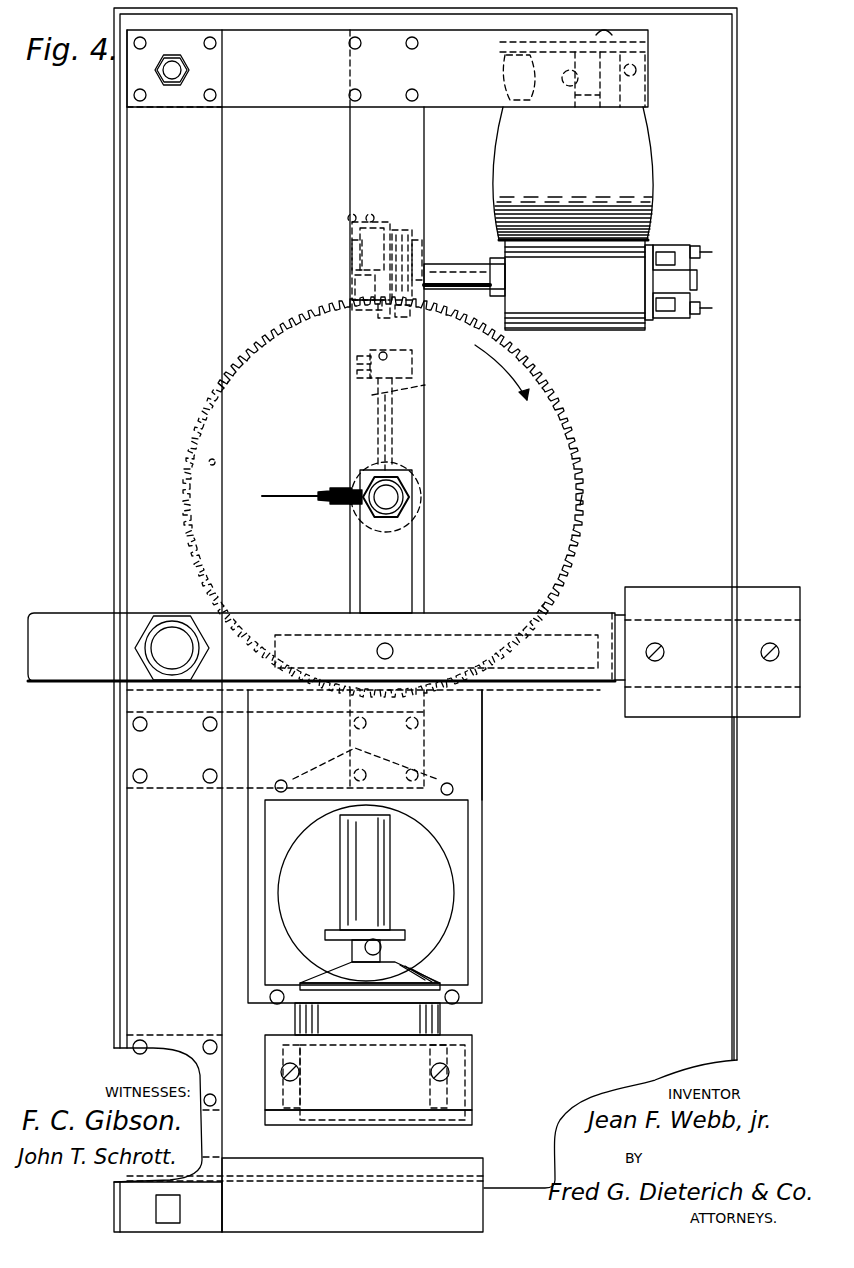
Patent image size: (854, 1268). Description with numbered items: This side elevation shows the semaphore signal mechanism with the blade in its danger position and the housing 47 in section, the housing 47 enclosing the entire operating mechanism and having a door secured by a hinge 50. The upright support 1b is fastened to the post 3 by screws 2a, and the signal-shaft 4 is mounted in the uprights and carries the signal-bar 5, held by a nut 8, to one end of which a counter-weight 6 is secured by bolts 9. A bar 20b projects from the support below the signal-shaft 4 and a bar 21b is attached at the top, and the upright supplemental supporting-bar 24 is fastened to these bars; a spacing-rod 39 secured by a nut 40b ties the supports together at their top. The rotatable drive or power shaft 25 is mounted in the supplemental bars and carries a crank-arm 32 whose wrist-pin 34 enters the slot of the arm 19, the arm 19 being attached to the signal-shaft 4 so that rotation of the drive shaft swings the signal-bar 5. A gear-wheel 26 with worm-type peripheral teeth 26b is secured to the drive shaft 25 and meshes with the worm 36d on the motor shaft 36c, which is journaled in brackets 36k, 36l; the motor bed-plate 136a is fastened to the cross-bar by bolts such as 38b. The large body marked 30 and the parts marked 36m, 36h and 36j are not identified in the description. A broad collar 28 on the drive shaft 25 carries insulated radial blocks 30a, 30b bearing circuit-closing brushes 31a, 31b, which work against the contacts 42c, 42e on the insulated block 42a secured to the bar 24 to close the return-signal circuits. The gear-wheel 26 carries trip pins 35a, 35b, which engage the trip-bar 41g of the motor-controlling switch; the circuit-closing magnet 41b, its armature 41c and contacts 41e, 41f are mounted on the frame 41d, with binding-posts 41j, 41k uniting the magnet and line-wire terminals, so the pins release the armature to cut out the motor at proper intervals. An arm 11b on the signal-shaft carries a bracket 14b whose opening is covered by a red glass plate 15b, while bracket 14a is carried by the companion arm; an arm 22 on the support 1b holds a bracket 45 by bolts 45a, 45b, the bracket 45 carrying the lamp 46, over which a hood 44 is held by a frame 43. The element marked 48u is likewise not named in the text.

The hinge 50 is at (740, 12).
The upright support 1b is at (174, 631).
The housing 47 is at (687, 888).
The bar 21b is at (276, 92).
The spacing-rod 39 is at (176, 70).
The nut 40b is at (162, 80).
The cylinder 30 is at (636, 158).
The bed-plate 136a is at (540, 45).
The bolt 38b is at (614, 30).
The valve stem 36m is at (571, 96).
The motor shaft 36c is at (490, 252).
The bracket 36k is at (488, 290).
The bracket 36l is at (696, 318).
The upper terminal clip 36h is at (672, 250).
The lower terminal clip 36j is at (663, 318).
The upright supplemental supporting-bar 24 is at (352, 168).
The circuit-closing magnet 41b is at (376, 240).
The binding-post 41k is at (372, 214).
The binding-post 41j is at (348, 218).
The frame 41d is at (352, 245).
The contact 41e is at (400, 245).
The contact 41f is at (408, 255).
The worm 36d is at (372, 280).
The trip-bar 41g is at (416, 252).
The armature 41c is at (365, 313).
The insulated block 42a is at (394, 321).
The trip finger 35a is at (410, 322).
The contact 42c is at (358, 360).
The contact 42e is at (358, 375).
The circuit-closing brush 31a is at (369, 403).
The insulated radial block 30a is at (394, 441).
The gear-wheel 26 is at (556, 434).
The peripheral teeth 26b is at (584, 518).
The trip finger 35b is at (216, 462).
The crank-arm 32 is at (400, 566).
The broad collar 28 is at (418, 512).
The rotatable drive or power shaft 25 is at (390, 495).
The circuit-closing brush 31b is at (284, 492).
The insulated radial block 30b is at (342, 500).
The signal-bar 5 is at (48, 622).
The nut 8 is at (145, 640).
The signal-shaft 4 is at (165, 655).
The wrist-pin 34 is at (394, 652).
The arm 19 is at (570, 620).
The counter-weight 6 is at (748, 600).
The bolt 9 is at (760, 652).
The arm 11b is at (240, 690).
The bar 20b is at (230, 786).
The frame 43 is at (360, 748).
The hood 44 is at (420, 782).
The bracket 14a is at (470, 940).
The bracket 14b is at (478, 737).
The glass plate 15b is at (462, 870).
The spindle 48u is at (370, 902).
The lamp 46 is at (364, 1012).
The arm 22 is at (470, 1042).
The bracket 45 is at (470, 1124).
The bolt 45a is at (299, 1072).
The bolt 45b is at (432, 1072).
The post 3 is at (305, 1195).
The screw 2a is at (192, 1207).